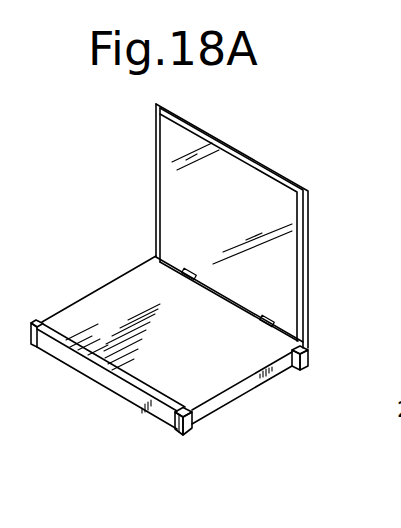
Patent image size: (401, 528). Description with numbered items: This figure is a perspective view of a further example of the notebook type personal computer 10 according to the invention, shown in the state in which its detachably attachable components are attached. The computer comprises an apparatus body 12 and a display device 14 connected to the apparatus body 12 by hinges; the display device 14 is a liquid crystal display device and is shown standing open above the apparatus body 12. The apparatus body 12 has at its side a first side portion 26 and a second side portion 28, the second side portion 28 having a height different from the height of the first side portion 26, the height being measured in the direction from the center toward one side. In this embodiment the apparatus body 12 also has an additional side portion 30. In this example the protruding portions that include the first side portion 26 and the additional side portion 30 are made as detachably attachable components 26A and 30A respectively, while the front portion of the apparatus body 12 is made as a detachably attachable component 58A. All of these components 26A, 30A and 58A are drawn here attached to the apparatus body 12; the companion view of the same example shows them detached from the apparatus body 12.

The notebook type personal computer 10 is at (283, 157).
The apparatus body 12 is at (237, 354).
The display device 14 is at (285, 246).
The first side portion 26 is at (187, 436).
The detachably attachable component 26A is at (30, 346).
The second side portion 28 is at (216, 403).
The additional side portion 30 is at (308, 362).
The detachably attachable component 30A is at (149, 258).
The detachably attachable component 58A is at (84, 368).